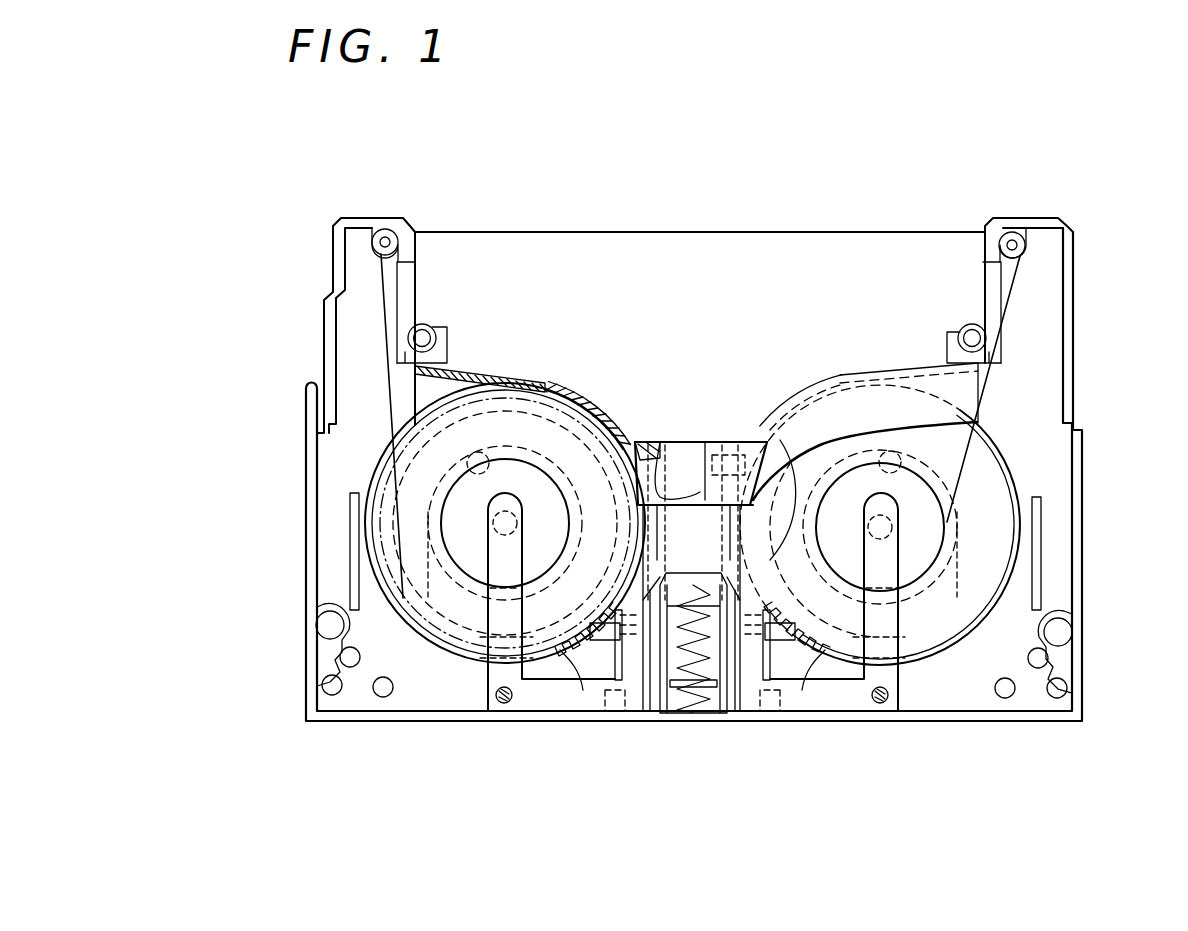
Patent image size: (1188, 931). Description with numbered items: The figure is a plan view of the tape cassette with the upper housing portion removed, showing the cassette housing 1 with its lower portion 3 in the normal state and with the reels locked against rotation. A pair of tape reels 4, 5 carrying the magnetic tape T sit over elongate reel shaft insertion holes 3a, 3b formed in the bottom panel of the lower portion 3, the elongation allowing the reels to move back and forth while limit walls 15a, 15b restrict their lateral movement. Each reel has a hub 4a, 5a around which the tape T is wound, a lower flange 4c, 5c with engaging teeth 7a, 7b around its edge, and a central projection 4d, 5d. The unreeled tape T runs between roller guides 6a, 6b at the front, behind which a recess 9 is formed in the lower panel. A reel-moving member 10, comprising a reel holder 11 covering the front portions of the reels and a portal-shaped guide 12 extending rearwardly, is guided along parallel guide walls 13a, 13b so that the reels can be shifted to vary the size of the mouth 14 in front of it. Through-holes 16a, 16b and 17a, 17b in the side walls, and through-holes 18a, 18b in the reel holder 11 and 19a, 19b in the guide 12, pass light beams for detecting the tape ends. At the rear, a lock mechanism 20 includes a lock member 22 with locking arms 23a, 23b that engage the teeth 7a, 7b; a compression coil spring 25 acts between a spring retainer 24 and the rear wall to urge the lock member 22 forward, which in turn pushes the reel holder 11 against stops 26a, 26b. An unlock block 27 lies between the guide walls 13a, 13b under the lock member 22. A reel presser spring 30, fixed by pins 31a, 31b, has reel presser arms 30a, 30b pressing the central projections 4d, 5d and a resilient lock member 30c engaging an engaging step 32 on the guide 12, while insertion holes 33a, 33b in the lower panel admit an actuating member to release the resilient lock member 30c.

The cassette housing 1 is at (432, 736).
The lower portion 3 is at (386, 722).
The reel shaft insertion hole 3a is at (520, 449).
The reel shaft insertion hole 3b is at (1000, 420).
The tape reel 4 is at (402, 618).
The hub 4a is at (457, 522).
The lower flange 4c is at (337, 622).
The central projection 4d is at (480, 503).
The tape reel 5 is at (932, 612).
The hub 5a is at (923, 533).
The lower flange 5c is at (950, 665).
The central projection 5d is at (960, 490).
The roller guide 6a is at (385, 229).
The roller guide 6b is at (1012, 232).
The engaging teeth 7a is at (572, 652).
The engaging teeth 7b is at (822, 652).
The recess 9 is at (417, 280).
The reel-moving member 10 is at (648, 442).
The reel holder 11 is at (812, 428).
The guide 12 is at (765, 414).
The guide wall 13a is at (660, 665).
The guide wall 13b is at (733, 655).
The mouth 14 is at (709, 266).
The limit wall 15a is at (420, 576).
The limit wall 15b is at (888, 570).
The through-hole 16a is at (330, 366).
The through-hole 16b is at (1074, 365).
The through-hole 17a is at (310, 497).
The through-hole 17b is at (1080, 497).
The through-hole 18a is at (547, 383).
The through-hole 18b is at (832, 383).
The through-hole 19a is at (660, 442).
The through-hole 19b is at (735, 465).
The lock mechanism 20 is at (682, 795).
The lock member 22 is at (595, 405).
The locking arm 23a is at (606, 692).
The locking arm 23b is at (822, 692).
The spring retainer 24 is at (680, 458).
The compression coil spring 25 is at (692, 690).
The stop 26a is at (447, 333).
The stop 26b is at (947, 340).
The unlock block 27 is at (663, 705).
The reel presser spring 30 is at (932, 655).
The reel presser arm 30a is at (402, 597).
The reel presser arm 30b is at (983, 621).
The resilient lock member 30c is at (706, 442).
The pin 31a is at (500, 702).
The pin 31b is at (885, 702).
The engaging step 32 is at (773, 440).
The insertion hole 33a is at (605, 642).
The insertion hole 33b is at (785, 642).
The magnetic tape T is at (578, 231).